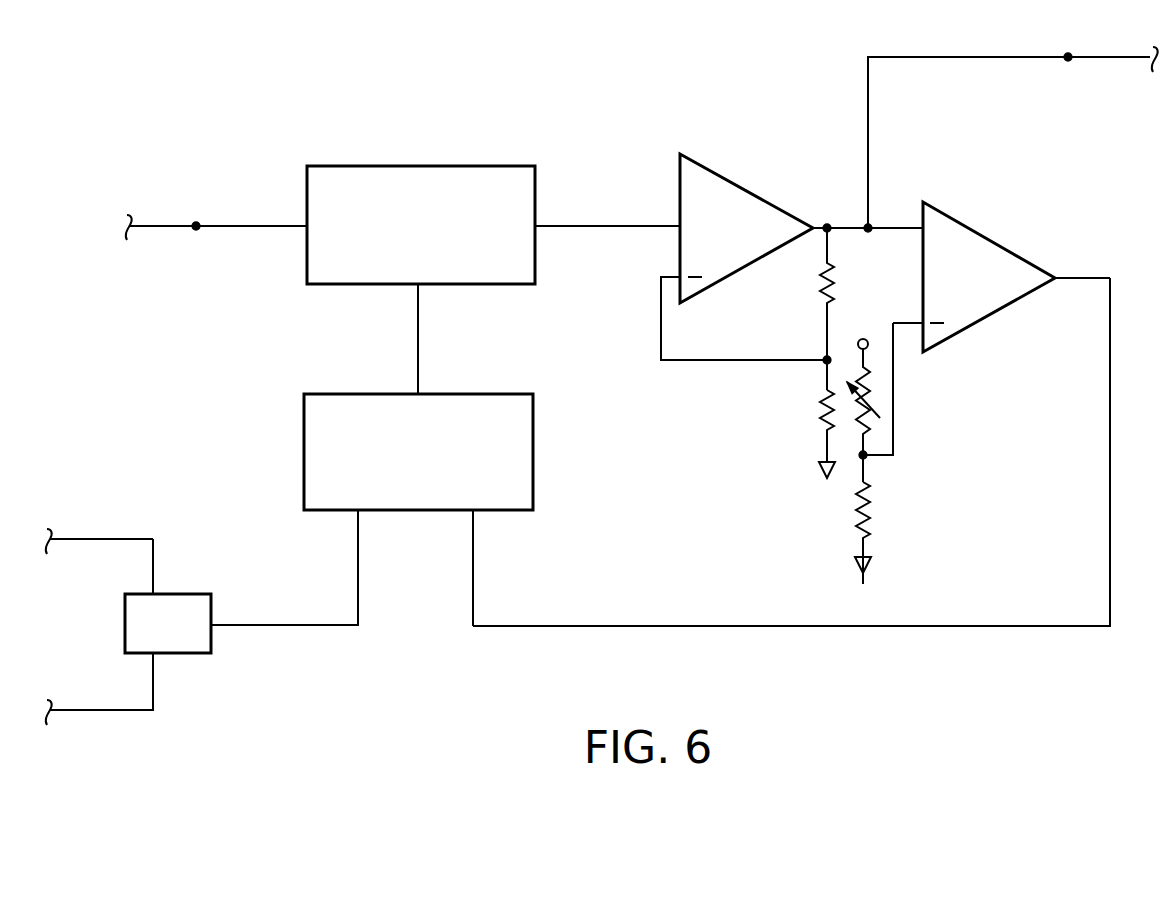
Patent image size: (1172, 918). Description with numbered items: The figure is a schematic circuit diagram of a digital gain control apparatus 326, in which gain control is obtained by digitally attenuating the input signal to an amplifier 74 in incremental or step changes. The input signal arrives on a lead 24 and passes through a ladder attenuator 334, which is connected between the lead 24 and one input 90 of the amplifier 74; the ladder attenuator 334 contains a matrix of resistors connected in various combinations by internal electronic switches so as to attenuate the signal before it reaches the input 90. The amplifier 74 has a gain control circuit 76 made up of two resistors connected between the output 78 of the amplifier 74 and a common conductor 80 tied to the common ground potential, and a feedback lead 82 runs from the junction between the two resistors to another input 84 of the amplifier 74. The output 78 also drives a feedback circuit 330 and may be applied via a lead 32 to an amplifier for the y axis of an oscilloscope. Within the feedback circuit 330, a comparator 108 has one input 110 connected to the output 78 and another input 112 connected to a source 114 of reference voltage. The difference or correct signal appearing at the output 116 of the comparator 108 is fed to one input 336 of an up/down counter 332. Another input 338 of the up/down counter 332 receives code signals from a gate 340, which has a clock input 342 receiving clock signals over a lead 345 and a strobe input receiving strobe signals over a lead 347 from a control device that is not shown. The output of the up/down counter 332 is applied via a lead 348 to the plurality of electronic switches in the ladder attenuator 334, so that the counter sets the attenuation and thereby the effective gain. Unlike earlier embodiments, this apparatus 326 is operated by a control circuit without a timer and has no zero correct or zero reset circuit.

The gain control apparatus 326 is at (325, 83).
The lead 24 is at (153, 226).
The ladder attenuator 334 is at (498, 270).
The lead 348 is at (418, 321).
The up/down counter 332 is at (522, 475).
The input of the up/down counter 338 is at (358, 586).
The input of the up/down counter 336 is at (474, 587).
The feedback circuit 330 is at (843, 650).
The gate 340 is at (193, 600).
The lead 345 is at (113, 537).
The clock input 342 is at (157, 575).
The lead 347 is at (120, 712).
The input of the amplifier 90 is at (658, 226).
The amplifier 74 is at (723, 190).
The input of the amplifier 84 is at (671, 277).
The output of the amplifier 78 is at (822, 224).
The feedback lead 82 is at (735, 362).
The gain control circuit 76 is at (840, 316).
The common conductor 80 is at (815, 463).
The input of the comparator 110 is at (896, 227).
The comparator 108 is at (987, 248).
The input of the comparator 112 is at (904, 327).
The output of the comparator 116 is at (1066, 278).
The source of reference voltage 114 is at (894, 478).
The lead 32 is at (1097, 57).